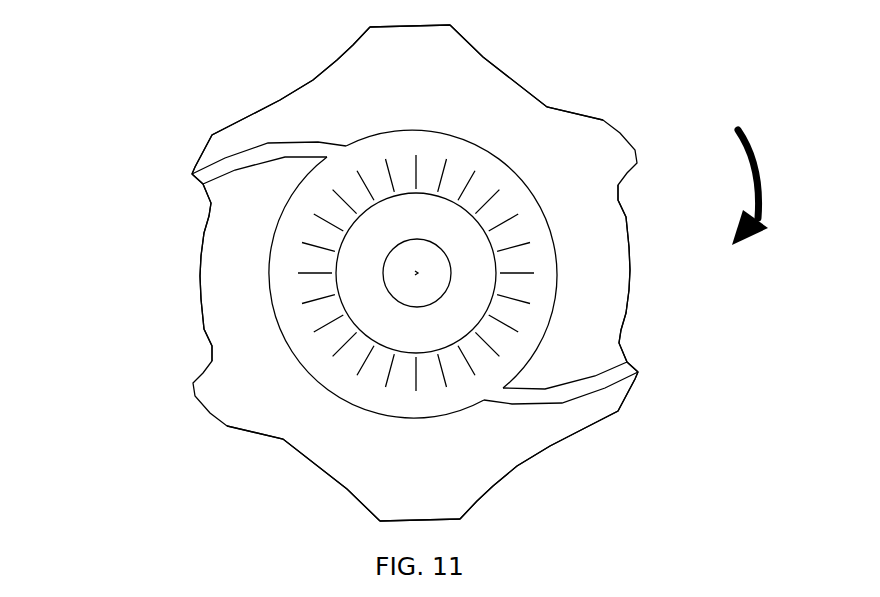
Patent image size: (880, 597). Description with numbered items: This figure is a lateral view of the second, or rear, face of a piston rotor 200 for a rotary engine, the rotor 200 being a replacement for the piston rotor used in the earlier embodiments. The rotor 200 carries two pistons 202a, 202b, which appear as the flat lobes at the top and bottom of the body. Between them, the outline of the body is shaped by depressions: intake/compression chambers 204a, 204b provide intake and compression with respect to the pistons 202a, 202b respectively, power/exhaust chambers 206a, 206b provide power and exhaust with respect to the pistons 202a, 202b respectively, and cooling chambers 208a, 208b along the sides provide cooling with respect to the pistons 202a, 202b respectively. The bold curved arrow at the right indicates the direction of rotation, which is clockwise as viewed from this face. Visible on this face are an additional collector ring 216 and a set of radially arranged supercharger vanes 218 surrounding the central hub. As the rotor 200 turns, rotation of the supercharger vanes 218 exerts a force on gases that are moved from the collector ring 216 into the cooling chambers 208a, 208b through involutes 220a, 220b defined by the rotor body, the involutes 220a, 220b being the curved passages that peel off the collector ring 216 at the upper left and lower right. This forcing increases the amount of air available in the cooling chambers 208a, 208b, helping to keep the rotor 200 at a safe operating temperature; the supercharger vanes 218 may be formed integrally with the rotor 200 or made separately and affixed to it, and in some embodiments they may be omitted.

The rotor 200 is at (133, 55).
The piston 202a is at (380, 26).
The piston 202b is at (382, 531).
The intake/compression chamber 204a is at (507, 62).
The intake/compression chamber 204b is at (295, 479).
The power/exhaust chamber 206a is at (297, 70).
The power/exhaust chamber 206b is at (518, 475).
The cooling chamber 208a is at (198, 259).
The cooling chamber 208b is at (628, 216).
The collector ring 216 is at (458, 128).
The supercharger vanes 218 is at (497, 187).
The involute 220a is at (188, 190).
The involute 220b is at (632, 355).